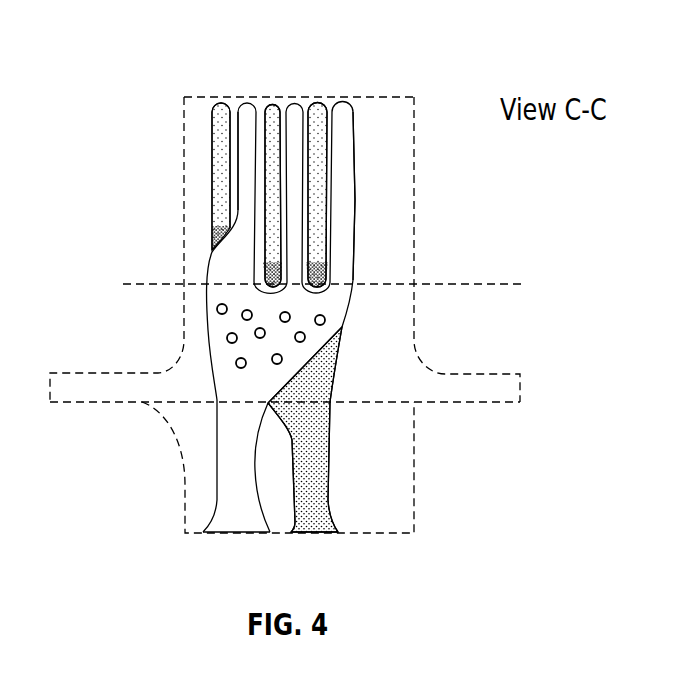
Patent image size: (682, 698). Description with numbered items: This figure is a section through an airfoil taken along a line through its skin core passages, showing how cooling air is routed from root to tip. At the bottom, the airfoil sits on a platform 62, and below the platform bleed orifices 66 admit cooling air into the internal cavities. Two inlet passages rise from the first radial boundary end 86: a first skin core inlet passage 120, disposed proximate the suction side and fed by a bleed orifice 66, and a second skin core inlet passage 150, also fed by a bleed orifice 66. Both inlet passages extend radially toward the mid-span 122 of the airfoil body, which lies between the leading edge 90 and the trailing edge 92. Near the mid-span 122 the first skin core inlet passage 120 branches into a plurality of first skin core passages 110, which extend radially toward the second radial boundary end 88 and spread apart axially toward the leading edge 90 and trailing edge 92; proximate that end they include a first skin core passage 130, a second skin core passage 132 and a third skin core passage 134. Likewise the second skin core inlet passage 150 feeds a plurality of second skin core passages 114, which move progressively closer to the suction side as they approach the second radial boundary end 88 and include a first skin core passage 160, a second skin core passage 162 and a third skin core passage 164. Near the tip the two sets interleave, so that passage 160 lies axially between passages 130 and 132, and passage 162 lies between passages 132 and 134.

The platform 62 is at (522, 404).
The bleed orifice 66 is at (237, 535).
The first radial boundary end 86 is at (416, 338).
The second radial boundary end 88 is at (393, 96).
The leading edge 90 is at (183, 225).
The trailing edge 92 is at (416, 218).
The first skin core passages 110 is at (318, 449).
The second skin core passages 114 is at (228, 390).
The first skin core inlet passage 120 is at (316, 497).
The mid-span 122 is at (512, 284).
The first skin core passage 130 is at (218, 104).
The second skin core passage 132 is at (271, 105).
The third skin core passage 134 is at (317, 105).
The second skin core inlet passage 150 is at (238, 485).
The first skin core passage 160 is at (247, 105).
The second skin core passage 162 is at (296, 105).
The third skin core passage 164 is at (340, 105).